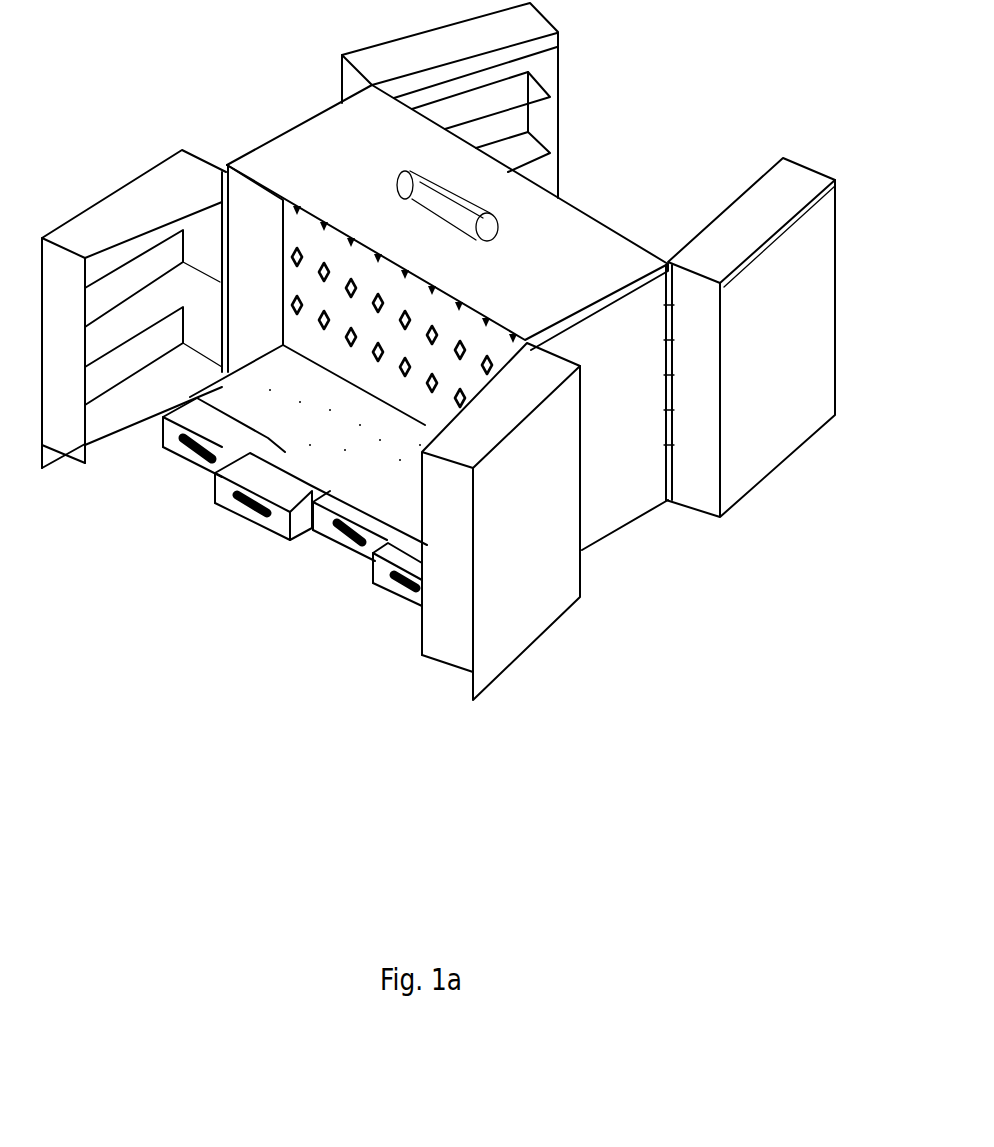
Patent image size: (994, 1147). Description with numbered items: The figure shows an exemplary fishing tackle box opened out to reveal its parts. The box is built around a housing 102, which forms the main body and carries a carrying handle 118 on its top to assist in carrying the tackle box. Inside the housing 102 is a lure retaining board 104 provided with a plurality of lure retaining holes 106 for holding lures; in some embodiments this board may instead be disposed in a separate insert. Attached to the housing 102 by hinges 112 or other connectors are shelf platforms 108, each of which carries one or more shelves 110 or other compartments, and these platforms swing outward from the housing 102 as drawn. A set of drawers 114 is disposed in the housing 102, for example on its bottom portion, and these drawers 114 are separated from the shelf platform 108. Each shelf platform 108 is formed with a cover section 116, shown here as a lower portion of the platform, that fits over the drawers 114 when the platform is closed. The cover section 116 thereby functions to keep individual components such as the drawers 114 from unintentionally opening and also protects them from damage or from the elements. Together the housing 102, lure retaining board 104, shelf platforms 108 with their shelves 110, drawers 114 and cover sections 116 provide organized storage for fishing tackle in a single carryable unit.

The housing 102 is at (284, 123).
The lure retaining board 104 is at (322, 371).
The lure retaining holes 106 is at (376, 354).
The shelf platform 108 is at (735, 488).
The shelves 110 is at (100, 258).
The hinges 112 is at (229, 163).
The drawers 114 is at (277, 518).
The cover section 116 is at (482, 693).
The carrying handle 118 is at (473, 197).